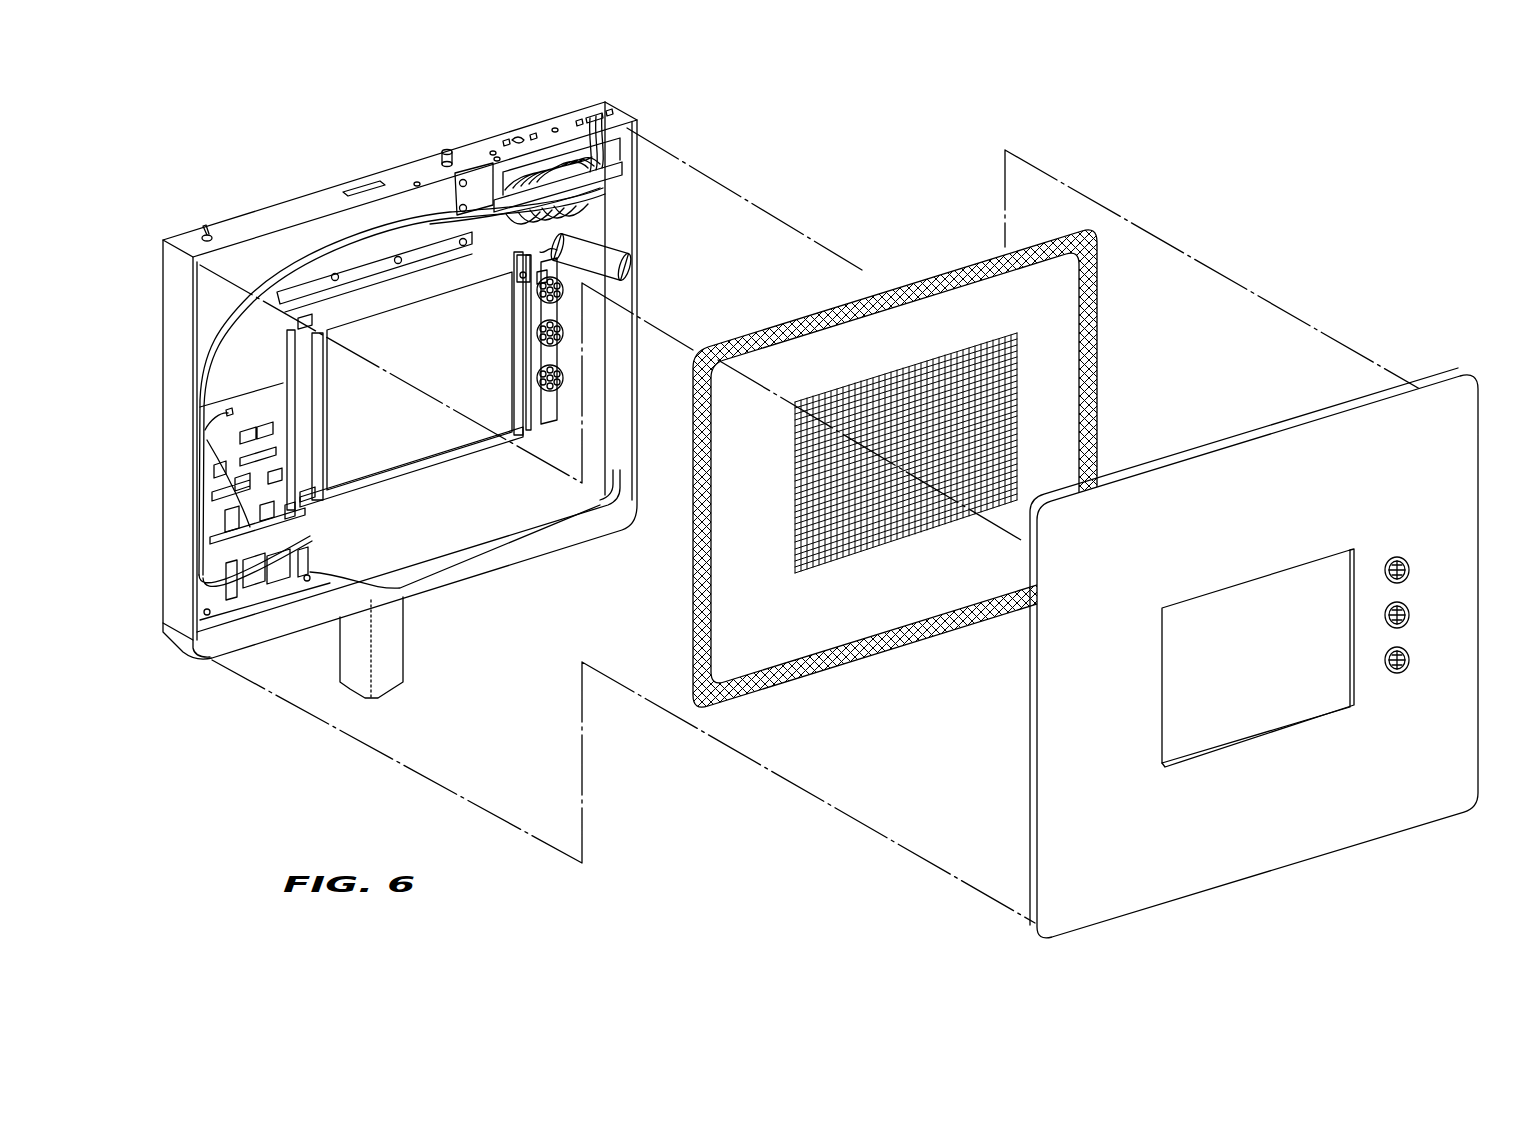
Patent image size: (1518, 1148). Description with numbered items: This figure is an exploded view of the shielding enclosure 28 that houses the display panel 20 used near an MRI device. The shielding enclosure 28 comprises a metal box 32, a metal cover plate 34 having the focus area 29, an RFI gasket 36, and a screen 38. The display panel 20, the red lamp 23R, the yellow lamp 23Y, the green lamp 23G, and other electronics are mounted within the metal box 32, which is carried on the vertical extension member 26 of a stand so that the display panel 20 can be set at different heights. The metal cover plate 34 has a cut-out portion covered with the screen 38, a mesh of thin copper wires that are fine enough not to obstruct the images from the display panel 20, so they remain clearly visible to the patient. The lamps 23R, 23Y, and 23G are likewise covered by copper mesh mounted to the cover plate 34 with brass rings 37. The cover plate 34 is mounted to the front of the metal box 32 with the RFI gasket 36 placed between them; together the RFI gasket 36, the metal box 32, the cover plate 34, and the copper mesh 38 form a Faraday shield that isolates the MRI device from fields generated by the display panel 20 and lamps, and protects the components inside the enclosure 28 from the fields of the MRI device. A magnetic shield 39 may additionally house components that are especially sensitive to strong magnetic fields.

The display panel 20 is at (377, 450).
The red lamp 23R is at (565, 295).
The yellow lamp 23Y is at (565, 342).
The green lamp 23G is at (565, 388).
The vertical extension member 26 is at (390, 641).
The shielding enclosure 28 is at (834, 147).
The focus area 29 is at (1442, 713).
The metal box 32 is at (280, 218).
The metal cover plate 34 is at (1142, 862).
The RFI gasket 36 is at (922, 287).
The brass rings 37 is at (1410, 660).
The screen 38 is at (858, 545).
The magnetic shield 39 is at (585, 250).